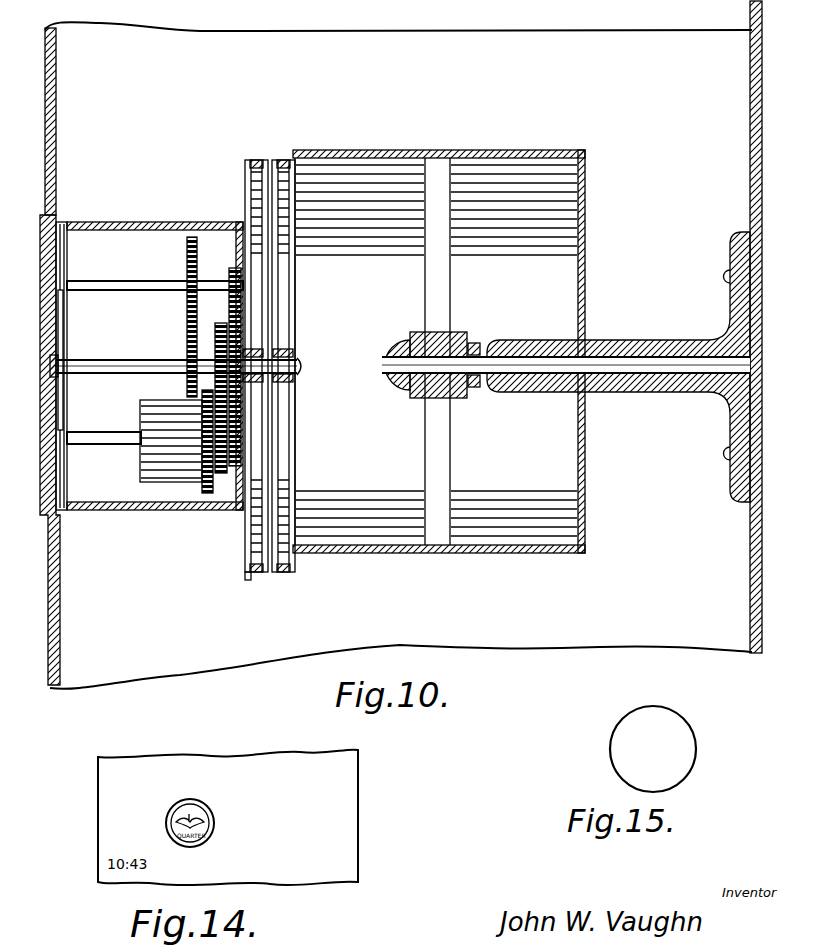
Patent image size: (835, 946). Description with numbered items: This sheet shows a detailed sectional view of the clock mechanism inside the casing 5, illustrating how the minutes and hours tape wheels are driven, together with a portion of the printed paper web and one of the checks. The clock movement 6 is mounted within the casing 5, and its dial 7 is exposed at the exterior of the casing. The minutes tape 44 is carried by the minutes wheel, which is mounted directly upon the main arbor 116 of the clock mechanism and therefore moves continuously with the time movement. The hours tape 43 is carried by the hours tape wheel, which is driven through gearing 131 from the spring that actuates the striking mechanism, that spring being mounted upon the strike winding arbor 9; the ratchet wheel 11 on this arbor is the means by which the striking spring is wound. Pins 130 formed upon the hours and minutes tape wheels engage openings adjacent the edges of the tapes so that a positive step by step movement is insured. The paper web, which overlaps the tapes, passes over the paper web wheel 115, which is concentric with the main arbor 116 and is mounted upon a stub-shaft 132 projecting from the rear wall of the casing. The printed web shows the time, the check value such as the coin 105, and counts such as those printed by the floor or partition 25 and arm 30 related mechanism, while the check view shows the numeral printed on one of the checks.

In FIG. 10, the casing 5 is at (56, 108).
In FIG. 10, the clock movement 6 is at (167, 223).
In FIG. 10, the dial 7 is at (68, 473).
In FIG. 10, the strike winding arbor 9 is at (112, 433).
In FIG. 10, the ratchet wheel 11 is at (203, 483).
In FIG. 10, the hours tape 43 is at (256, 305).
In FIG. 10, the minutes tape 44 is at (285, 278).
In FIG. 10, the paper web wheel 115 is at (439, 351).
In FIG. 10, the main arbor 116 is at (113, 362).
In FIG. 10, the pins 130 is at (248, 574).
In FIG. 10, the gearing 131 is at (246, 340).
In FIG. 10, the stub-shaft 132 is at (510, 360).
In FIG. 14, the floor or partition 25 is at (224, 864).
In FIG. 15, the floor or partition 25 is at (653, 750).
In FIG. 14, the arm 30 is at (271, 864).
In FIG. 14, the coin 105 is at (313, 864).